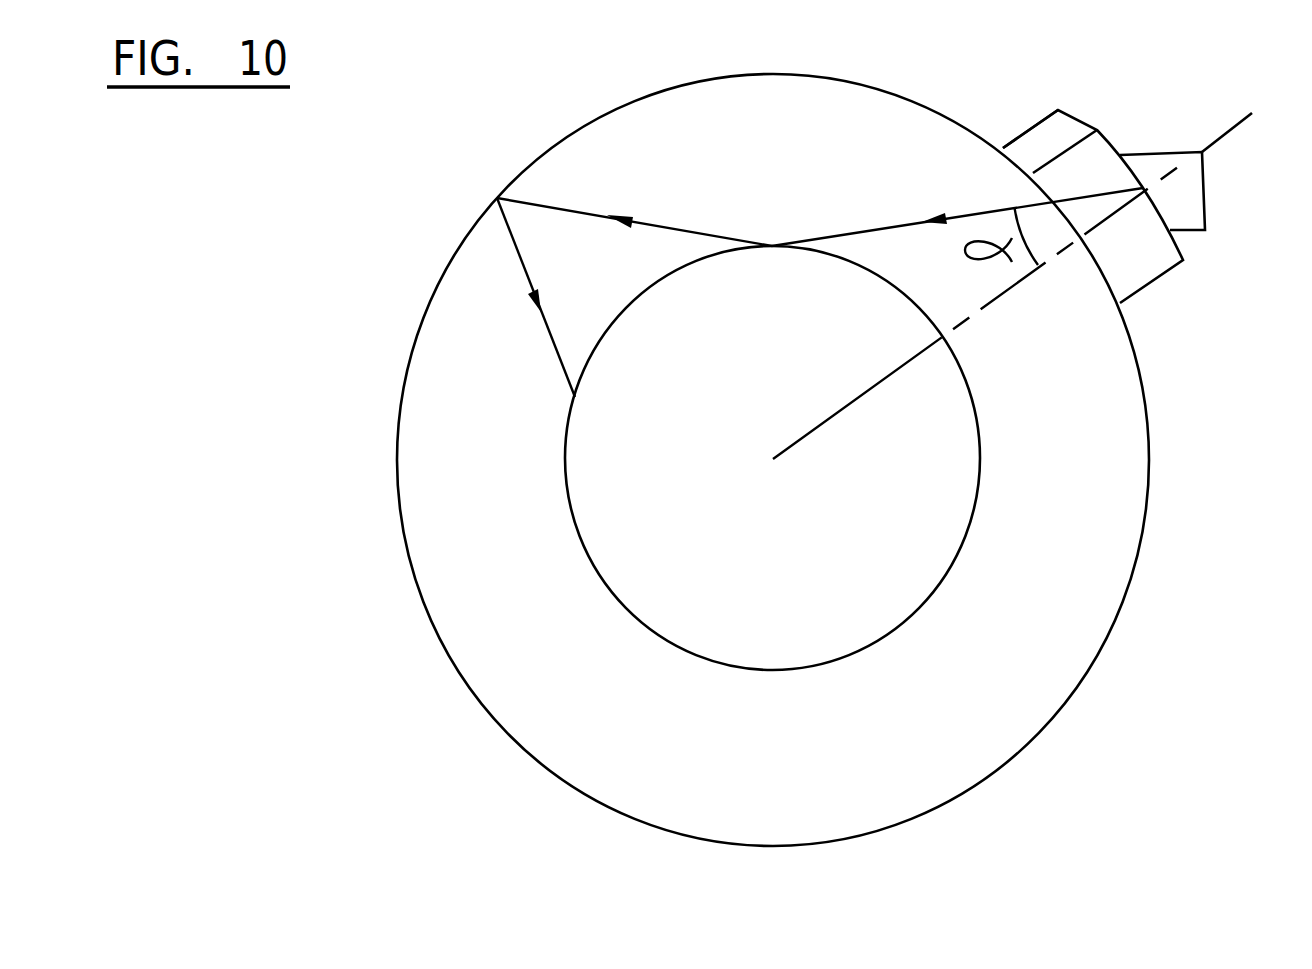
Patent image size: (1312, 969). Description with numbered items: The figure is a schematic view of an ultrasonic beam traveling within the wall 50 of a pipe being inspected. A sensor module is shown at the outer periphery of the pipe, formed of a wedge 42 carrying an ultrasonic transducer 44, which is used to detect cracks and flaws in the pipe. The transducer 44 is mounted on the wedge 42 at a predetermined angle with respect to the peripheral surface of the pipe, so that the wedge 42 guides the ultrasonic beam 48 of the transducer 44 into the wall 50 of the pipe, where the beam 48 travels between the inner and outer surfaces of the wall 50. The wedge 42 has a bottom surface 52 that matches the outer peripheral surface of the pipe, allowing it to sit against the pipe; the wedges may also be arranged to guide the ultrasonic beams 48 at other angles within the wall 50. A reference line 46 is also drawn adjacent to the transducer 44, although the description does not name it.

The wedge 42 is at (1143, 263).
The ultrasonic transducer 44 is at (1205, 233).
The reference line 46 is at (1233, 130).
The ultrasonic beam 48 is at (523, 275).
The wall of the pipe 50 is at (507, 715).
The bottom surface 52 is at (1008, 162).